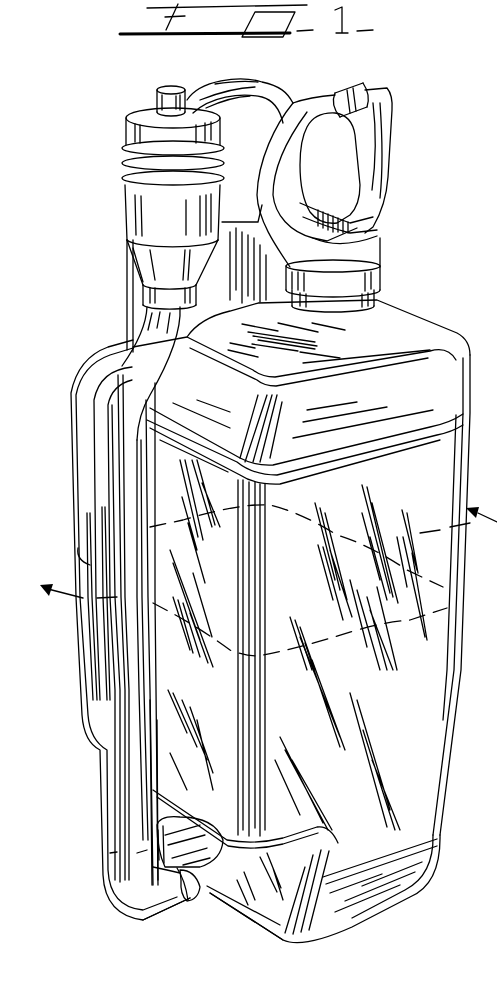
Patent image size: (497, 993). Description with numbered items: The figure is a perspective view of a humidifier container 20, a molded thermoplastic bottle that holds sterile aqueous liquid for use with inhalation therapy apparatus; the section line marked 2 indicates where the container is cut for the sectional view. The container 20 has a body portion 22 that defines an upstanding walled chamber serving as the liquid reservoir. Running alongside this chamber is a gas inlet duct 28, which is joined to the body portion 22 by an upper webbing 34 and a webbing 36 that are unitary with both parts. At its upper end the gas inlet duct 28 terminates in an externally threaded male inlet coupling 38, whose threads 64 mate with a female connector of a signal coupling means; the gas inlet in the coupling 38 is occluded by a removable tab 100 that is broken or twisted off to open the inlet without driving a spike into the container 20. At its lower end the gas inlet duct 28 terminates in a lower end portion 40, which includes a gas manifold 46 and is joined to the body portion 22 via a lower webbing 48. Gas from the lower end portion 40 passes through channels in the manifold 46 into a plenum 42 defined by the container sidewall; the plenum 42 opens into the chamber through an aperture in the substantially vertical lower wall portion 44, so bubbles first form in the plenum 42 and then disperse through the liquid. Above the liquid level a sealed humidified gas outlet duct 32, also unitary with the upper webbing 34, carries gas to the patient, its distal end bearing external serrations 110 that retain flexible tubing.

The humidifier container 20 is at (423, 252).
The body portion 22 is at (471, 380).
The gas inlet duct 28 is at (98, 811).
The gas outlet duct 32 is at (293, 150).
The upper webbing 34 is at (243, 289).
The webbing 36 is at (167, 808).
The inlet coupling 38 is at (123, 205).
The lower end portion 40 is at (168, 917).
The plenum 42 is at (196, 846).
The lower wall portion 44 is at (267, 893).
The gas manifold 46 is at (188, 900).
The lower webbing 48 is at (249, 838).
The threads 64 is at (123, 150).
The removable tab 100 is at (213, 92).
The external serrations 110 is at (336, 97).
The section line 2- 2 is at (268, 571).